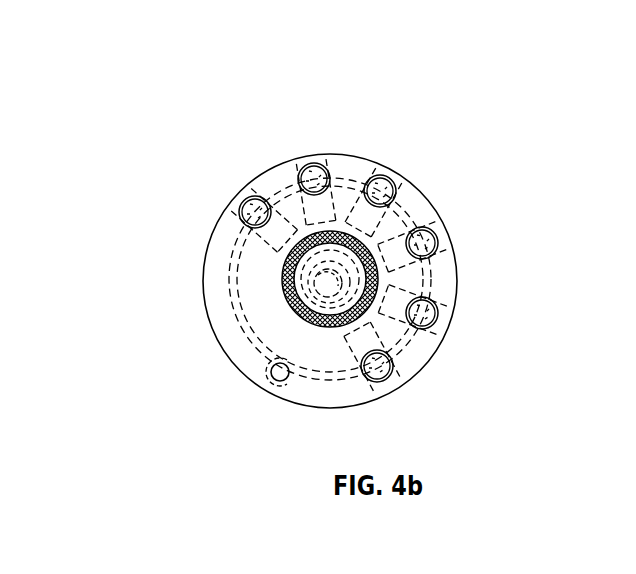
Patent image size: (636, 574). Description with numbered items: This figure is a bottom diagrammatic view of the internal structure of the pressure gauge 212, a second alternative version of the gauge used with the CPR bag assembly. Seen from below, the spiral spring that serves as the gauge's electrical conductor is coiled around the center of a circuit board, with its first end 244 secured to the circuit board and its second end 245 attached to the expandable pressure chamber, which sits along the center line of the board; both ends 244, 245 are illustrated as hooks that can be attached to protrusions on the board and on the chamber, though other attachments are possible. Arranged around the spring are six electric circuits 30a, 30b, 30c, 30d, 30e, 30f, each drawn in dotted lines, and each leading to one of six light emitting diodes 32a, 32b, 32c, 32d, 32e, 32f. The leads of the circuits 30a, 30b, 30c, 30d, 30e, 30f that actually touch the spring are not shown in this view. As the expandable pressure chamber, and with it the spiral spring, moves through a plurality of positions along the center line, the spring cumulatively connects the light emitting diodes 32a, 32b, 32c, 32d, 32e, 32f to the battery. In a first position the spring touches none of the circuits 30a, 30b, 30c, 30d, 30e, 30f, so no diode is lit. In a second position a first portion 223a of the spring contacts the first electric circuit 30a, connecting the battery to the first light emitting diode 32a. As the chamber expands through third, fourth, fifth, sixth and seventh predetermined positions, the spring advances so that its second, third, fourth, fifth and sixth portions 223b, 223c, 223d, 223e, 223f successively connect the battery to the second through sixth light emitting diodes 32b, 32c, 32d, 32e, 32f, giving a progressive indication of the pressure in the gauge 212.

The pressure gauge 212 is at (474, 156).
The second end of the spiral spring 245 is at (313, 268).
The first end of the spiral spring 244 is at (268, 391).
The first electric circuit 30a is at (365, 375).
The second electric circuit 30b is at (391, 370).
The third electric circuit 30c is at (413, 271).
The fourth electric circuit 30d is at (373, 220).
The fifth electric circuit 30e is at (330, 168).
The sixth electric circuit 30f is at (268, 200).
The first light emitting diode 32a is at (381, 378).
The second light emitting diode 32b is at (425, 332).
The third light emitting diode 32c is at (400, 263).
The fourth light emitting diode 32d is at (382, 176).
The fifth light emitting diode 32e is at (322, 164).
The sixth light emitting diode 32f is at (255, 196).
The first portion of the spiral spring 223a is at (385, 374).
The second portion of the spiral spring 223b is at (436, 317).
The third portion of the spiral spring 223c is at (436, 247).
The fourth portion of the spiral spring 223d is at (392, 181).
The fifth portion of the spiral spring 223e is at (312, 165).
The sixth portion of the spiral spring 223f is at (246, 201).